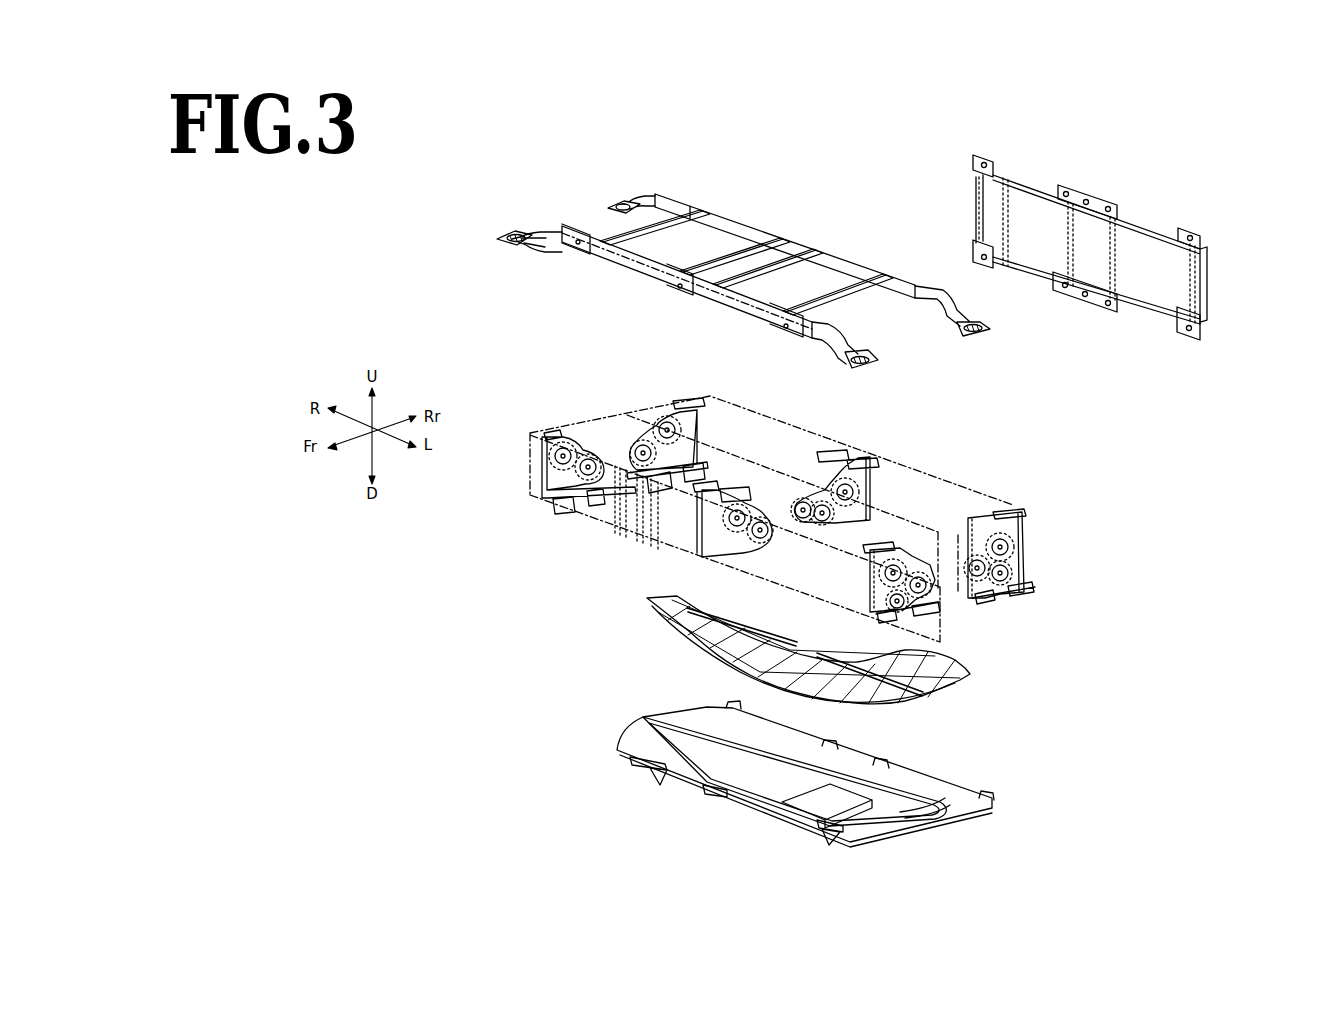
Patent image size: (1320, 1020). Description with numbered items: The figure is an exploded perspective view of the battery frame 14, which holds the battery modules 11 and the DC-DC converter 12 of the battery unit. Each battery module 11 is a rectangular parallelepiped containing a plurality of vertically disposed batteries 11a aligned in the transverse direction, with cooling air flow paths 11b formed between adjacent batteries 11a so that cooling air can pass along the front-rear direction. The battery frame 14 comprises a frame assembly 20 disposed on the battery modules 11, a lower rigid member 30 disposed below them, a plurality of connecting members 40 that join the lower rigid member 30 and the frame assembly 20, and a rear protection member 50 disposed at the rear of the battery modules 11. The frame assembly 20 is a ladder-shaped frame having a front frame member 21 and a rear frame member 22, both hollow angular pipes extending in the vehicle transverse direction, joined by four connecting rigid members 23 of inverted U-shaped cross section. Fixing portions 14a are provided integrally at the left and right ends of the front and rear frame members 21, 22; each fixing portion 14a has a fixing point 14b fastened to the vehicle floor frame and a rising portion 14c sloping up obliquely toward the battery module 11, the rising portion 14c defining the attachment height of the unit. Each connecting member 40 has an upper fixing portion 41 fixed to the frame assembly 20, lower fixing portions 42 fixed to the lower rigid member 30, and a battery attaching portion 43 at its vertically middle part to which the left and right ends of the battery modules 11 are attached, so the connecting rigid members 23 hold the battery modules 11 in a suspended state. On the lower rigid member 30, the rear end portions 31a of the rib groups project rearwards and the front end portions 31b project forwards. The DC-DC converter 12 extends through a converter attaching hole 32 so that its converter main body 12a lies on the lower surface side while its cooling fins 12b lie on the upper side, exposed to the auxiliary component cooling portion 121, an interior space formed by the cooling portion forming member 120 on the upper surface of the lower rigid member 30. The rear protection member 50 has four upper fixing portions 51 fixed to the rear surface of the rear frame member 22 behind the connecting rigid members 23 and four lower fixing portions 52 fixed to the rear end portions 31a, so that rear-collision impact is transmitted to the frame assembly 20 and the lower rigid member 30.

The battery module 11 is at (757, 511).
The battery 11a is at (622, 518).
The cooling air flow path 11b is at (655, 525).
The DC-DC converter 12 is at (794, 794).
The converter main body 12a is at (786, 810).
The cooling fin 12b is at (781, 803).
The battery frame 14 is at (1168, 490).
The fixing portion 14a is at (741, 284).
The fixing point 14b is at (505, 232).
The rising portion 14c is at (520, 245).
The frame assembly 20 is at (741, 284).
The front frame member 21 is at (633, 282).
The rear frame member 22 is at (846, 251).
The connecting rigid member 23 is at (668, 207).
The lower rigid member 30 is at (798, 768).
The rear end portion 31a is at (728, 704).
The front end portion 31b is at (632, 772).
The converter attaching hole 32 is at (868, 801).
The connecting member 40 is at (790, 511).
The upper fixing portion 41 is at (1015, 512).
The lower fixing portion 42 is at (1033, 585).
The battery attaching portion 43 is at (1005, 548).
The rear protection member 50 is at (1124, 246).
The upper fixing portion 51 is at (1063, 184).
The lower fixing portion 52 is at (1060, 296).
The cooling portion forming member 120 is at (962, 678).
The auxiliary component cooling portion 121 is at (912, 818).